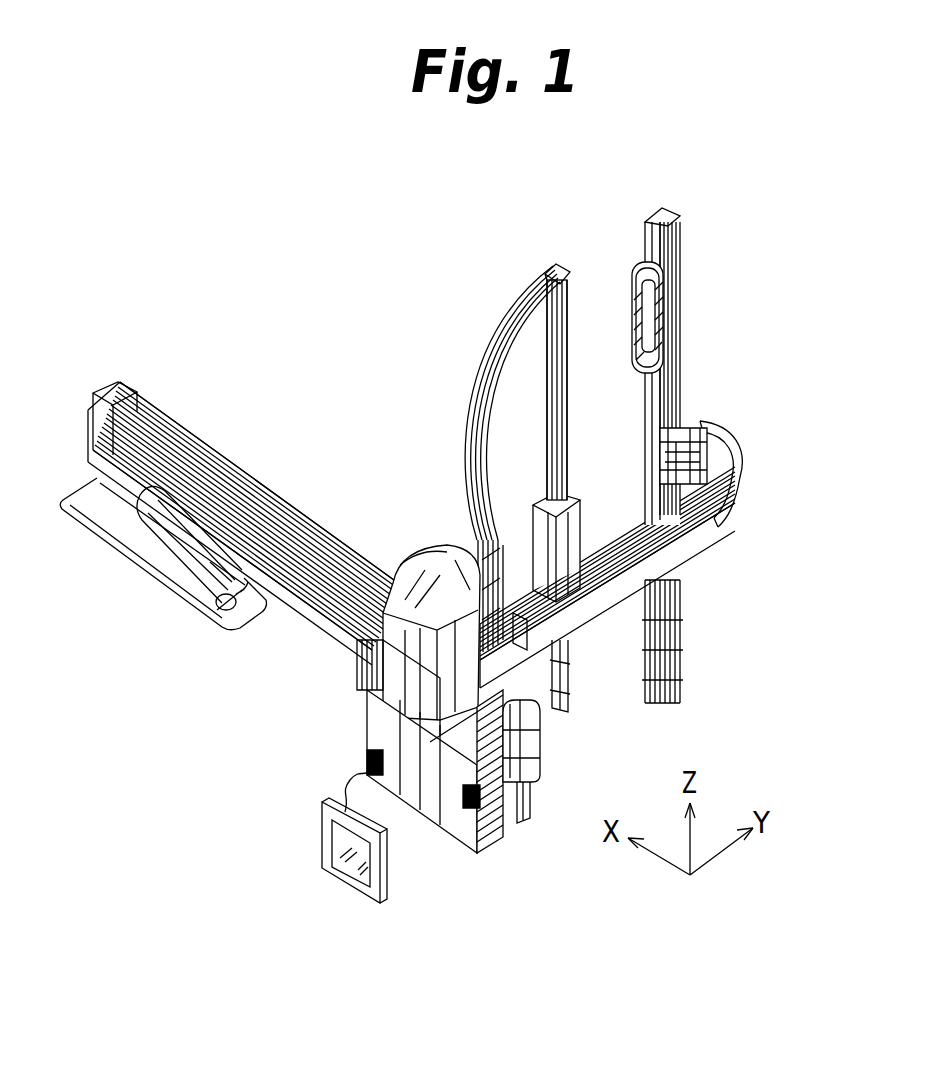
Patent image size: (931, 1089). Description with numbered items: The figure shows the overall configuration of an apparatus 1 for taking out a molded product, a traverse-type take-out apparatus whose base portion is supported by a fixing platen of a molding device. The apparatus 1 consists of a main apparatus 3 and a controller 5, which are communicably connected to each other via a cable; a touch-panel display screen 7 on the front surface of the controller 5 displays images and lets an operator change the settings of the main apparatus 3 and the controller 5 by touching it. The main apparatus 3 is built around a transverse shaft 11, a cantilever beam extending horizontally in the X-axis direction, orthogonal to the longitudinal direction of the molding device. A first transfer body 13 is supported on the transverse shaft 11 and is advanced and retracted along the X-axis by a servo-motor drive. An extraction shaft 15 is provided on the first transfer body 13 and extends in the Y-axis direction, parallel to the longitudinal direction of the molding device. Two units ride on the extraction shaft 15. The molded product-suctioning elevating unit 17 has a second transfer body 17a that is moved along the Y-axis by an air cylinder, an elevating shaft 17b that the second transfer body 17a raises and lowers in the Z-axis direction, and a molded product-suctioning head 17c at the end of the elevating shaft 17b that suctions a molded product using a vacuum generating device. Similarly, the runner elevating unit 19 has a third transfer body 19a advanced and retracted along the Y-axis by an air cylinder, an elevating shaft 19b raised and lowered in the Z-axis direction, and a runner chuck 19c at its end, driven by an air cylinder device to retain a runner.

The apparatus for taking out a molded product 1 is at (375, 306).
The main apparatus 3 is at (260, 435).
The controller 5 is at (322, 818).
The touch-panel display screen 7 is at (340, 838).
The transverse shaft 11 is at (187, 432).
The first transfer body 13 is at (437, 560).
The extraction shaft 15 is at (737, 509).
The molded product-suctioning elevating unit 17 is at (683, 250).
The second transfer body 17a is at (693, 453).
The elevating shaft 17b is at (680, 308).
The molded product-suctioning head 17c is at (677, 687).
The runner elevating unit 19 is at (553, 267).
The third transfer body 19a is at (593, 540).
The elevating shaft 19b is at (565, 387).
The runner chuck 19c is at (567, 690).